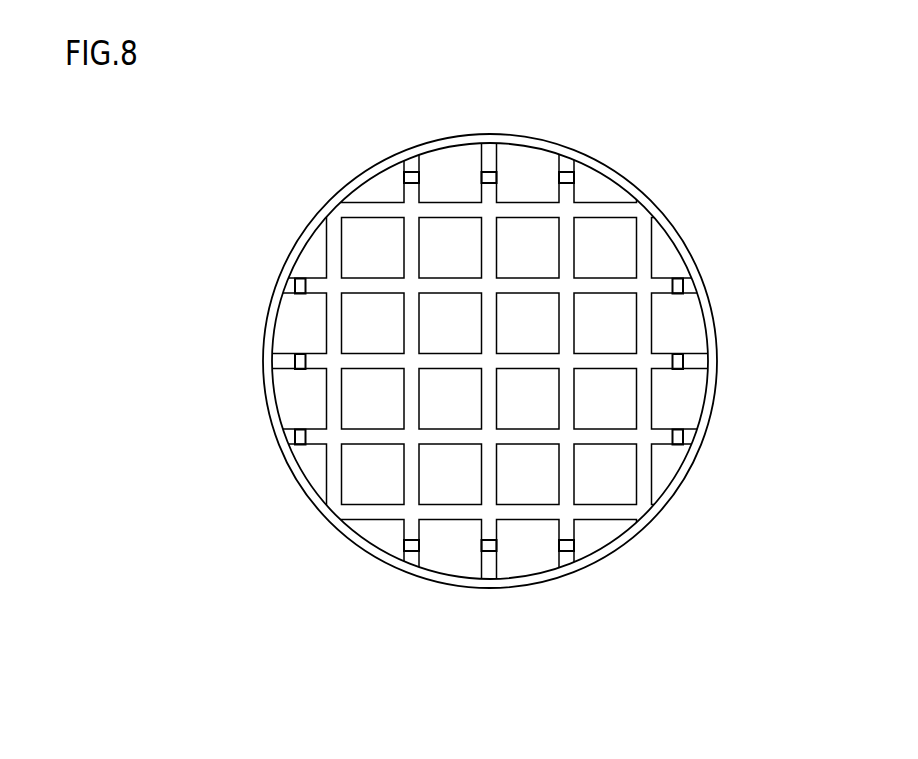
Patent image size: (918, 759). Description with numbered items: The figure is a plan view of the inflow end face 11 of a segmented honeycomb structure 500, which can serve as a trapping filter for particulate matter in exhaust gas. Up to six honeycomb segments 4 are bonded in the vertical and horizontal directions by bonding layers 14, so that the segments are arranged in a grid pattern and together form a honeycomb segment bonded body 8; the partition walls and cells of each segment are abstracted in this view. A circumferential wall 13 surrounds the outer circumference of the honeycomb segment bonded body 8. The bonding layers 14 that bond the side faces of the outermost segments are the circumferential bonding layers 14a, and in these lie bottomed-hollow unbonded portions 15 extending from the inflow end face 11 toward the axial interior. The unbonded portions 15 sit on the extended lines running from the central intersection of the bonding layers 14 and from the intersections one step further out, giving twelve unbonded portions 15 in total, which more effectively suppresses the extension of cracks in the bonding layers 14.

The honeycomb structure 500 is at (774, 68).
The inflow end face 11 is at (352, 162).
The circumferential wall 13 is at (704, 422).
The bonding layer 14 is at (489, 361).
The circumferential bonding layer 14a is at (489, 172).
The unbonded portion 15 is at (419, 177).
The honeycomb segment bonded body 8 is at (628, 222).
The honeycomb segment 4 is at (627, 328).